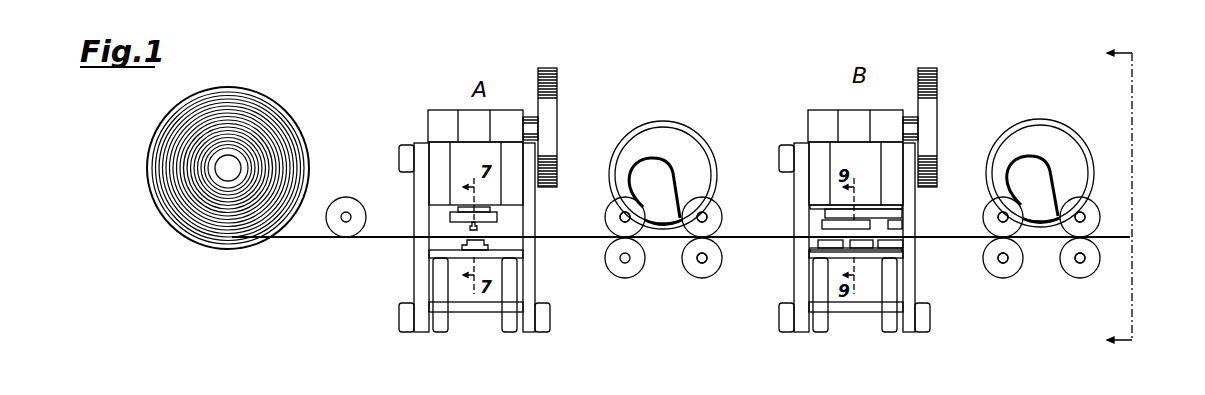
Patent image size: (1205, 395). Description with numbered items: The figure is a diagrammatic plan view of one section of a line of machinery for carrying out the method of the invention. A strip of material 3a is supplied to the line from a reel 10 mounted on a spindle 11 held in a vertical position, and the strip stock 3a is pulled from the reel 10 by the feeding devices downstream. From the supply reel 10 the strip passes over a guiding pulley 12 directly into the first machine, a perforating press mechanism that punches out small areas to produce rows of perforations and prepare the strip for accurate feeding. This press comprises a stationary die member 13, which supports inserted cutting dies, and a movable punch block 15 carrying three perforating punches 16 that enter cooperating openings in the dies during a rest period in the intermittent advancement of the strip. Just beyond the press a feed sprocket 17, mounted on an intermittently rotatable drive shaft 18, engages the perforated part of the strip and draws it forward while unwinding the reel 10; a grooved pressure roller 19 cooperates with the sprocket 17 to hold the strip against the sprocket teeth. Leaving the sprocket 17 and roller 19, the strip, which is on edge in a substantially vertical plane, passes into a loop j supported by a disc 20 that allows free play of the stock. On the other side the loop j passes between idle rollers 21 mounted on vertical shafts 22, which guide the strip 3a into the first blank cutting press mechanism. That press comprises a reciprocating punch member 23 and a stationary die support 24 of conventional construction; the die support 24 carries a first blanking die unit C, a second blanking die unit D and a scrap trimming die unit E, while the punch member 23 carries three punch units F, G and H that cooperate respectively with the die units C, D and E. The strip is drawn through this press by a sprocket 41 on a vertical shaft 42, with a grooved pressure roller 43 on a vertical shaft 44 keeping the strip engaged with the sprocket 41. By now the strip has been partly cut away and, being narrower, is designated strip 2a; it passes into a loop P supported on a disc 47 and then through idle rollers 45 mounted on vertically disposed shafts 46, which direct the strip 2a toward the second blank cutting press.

The reel 10 is at (283, 115).
The spindle 11 is at (230, 168).
The guiding pulley 12 is at (347, 212).
The strip of material 3a is at (385, 235).
The stationary die member 13 is at (462, 245).
The movable punch block 15 is at (493, 217).
The perforating punches 16 is at (478, 228).
The feed sprocket 17 is at (610, 215).
The drive shaft 18 is at (623, 216).
The grooved pressure roller 19 is at (615, 260).
The disc 20 is at (688, 148).
The idle rollers 21 is at (714, 215).
The vertical shafts 22 is at (704, 216).
The reciprocating punch member 23 is at (828, 213).
The stationary die support 24 is at (823, 252).
The sprocket 41 is at (990, 212).
The vertical shaft 42 is at (997, 218).
The grooved pressure roller 43 is at (992, 258).
The vertical shaft 44 is at (1002, 263).
The idle rollers 45 is at (1088, 214).
The vertically disposed shafts 46 is at (1082, 216).
The disc 47 is at (1063, 153).
The narrowed strip 2a is at (1112, 237).
The loop j is at (648, 158).
The loop P is at (1028, 158).
The first blanking die unit C is at (827, 244).
The second blanking die unit D is at (860, 248).
The scrap trimming die unit E is at (893, 242).
The punch unit F is at (822, 225).
The punch unit G is at (853, 226).
The punch unit H is at (893, 223).